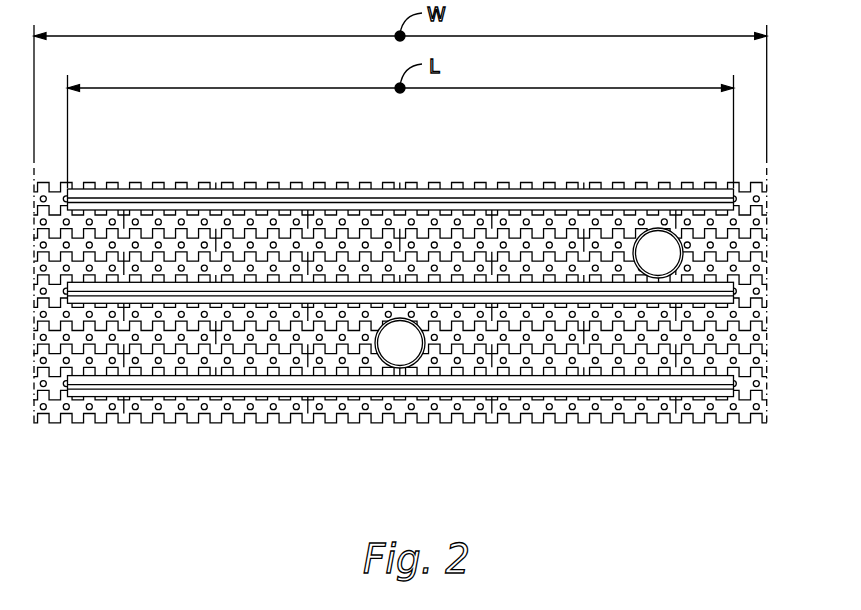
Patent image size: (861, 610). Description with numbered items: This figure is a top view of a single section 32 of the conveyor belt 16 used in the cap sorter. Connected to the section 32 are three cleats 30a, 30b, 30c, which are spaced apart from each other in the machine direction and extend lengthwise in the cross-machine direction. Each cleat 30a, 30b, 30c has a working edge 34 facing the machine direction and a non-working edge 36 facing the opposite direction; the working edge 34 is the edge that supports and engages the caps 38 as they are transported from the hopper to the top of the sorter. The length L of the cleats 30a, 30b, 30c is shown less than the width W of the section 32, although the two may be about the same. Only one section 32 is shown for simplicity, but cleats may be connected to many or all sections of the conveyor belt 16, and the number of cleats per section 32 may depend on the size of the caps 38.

The conveyor belt 16 is at (502, 430).
The cleat 30a is at (456, 186).
The cleat 30b is at (239, 305).
The cleat 30c is at (556, 397).
The section 32 is at (243, 476).
The working edge 34 is at (273, 188).
The non-working edge 36 is at (213, 216).
The cap 38 is at (657, 248).